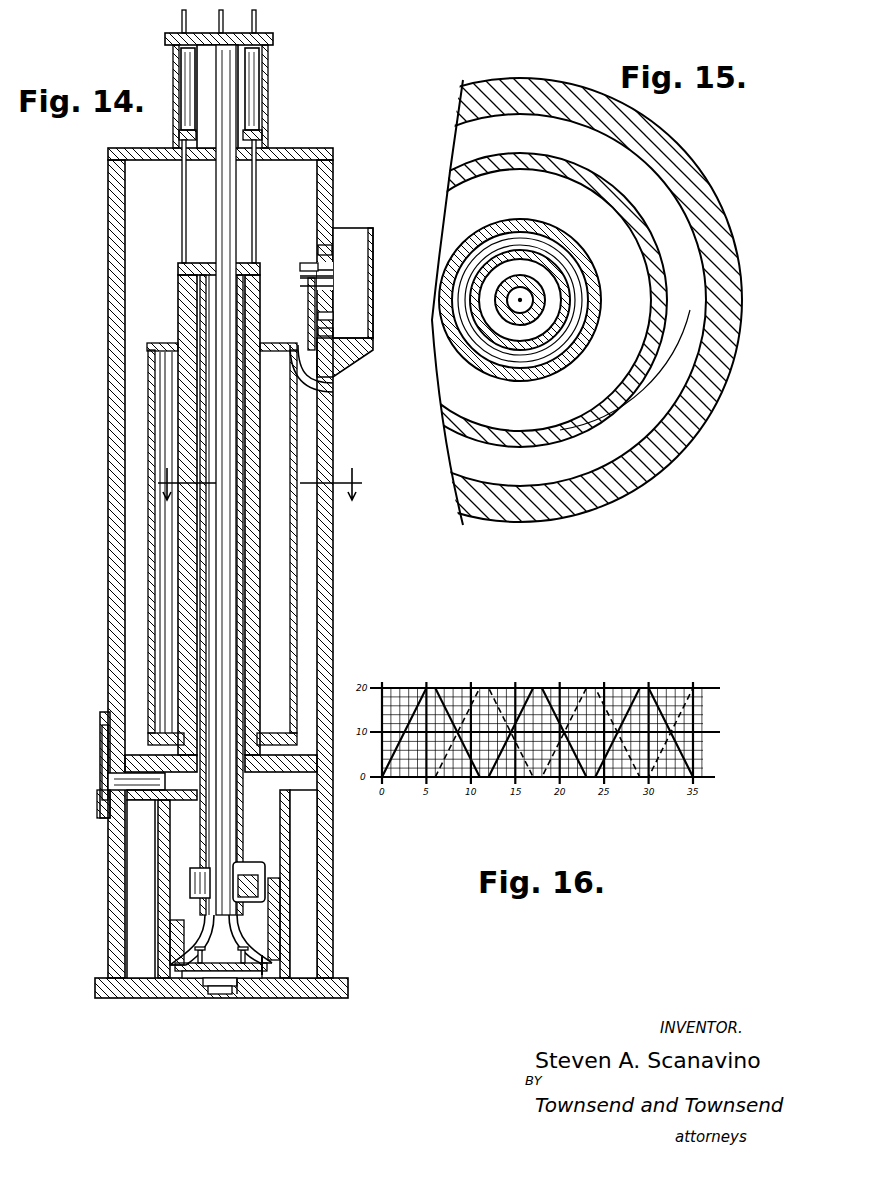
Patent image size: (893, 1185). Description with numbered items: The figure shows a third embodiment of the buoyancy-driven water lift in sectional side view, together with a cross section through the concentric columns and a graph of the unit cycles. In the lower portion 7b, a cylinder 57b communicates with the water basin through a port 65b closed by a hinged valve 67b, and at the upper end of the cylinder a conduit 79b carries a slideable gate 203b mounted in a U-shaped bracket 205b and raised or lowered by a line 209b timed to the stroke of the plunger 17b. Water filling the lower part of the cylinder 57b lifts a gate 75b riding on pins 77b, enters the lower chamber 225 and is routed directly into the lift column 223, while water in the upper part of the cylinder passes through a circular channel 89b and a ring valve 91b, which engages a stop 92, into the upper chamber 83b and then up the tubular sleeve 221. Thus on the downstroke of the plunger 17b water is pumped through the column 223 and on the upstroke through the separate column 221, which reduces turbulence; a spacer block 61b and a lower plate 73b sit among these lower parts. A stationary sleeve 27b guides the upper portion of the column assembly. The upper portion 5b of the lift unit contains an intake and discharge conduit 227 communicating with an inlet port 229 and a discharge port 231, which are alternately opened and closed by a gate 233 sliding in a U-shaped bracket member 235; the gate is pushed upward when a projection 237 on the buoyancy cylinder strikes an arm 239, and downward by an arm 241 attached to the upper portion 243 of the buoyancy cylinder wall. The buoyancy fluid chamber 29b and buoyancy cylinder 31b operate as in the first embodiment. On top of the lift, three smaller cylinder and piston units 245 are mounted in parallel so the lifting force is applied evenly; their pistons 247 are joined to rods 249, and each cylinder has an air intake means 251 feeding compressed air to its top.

In FIG. 14, the upper portion of the lift unit 5b is at (212, 573).
In FIG. 14, the lower portion of the lift unit 7b is at (77, 819).
In FIG. 14, the plunger 17b is at (172, 922).
In FIG. 14, the stationary sleeve 27b is at (262, 553).
In FIG. 15, the stationary sleeve 27b is at (568, 352).
In FIG. 14, the buoyancy fluid chamber 29b is at (320, 606).
In FIG. 15, the buoyancy fluid chamber 29b is at (678, 378).
In FIG. 14, the buoyancy cylinder 31b is at (157, 438).
In FIG. 15, the buoyancy cylinder 31b is at (618, 364).
In FIG. 14, the cylinder 57b is at (168, 850).
In FIG. 14, the spacer block 61b is at (145, 907).
In FIG. 14, the port 65b is at (226, 995).
In FIG. 14, the hinged valve 67b is at (242, 990).
In FIG. 14, the lower plate 73b is at (215, 986).
In FIG. 14, the gate 75b is at (202, 974).
In FIG. 14, the pins 77b is at (182, 968).
In FIG. 14, the conduit 79b is at (110, 770).
In FIG. 14, the upper chamber 83b is at (195, 886).
In FIG. 14, the circular channel 89b is at (273, 897).
In FIG. 14, the ring valve 91b is at (252, 892).
In FIG. 14, the stop 92 is at (246, 877).
In FIG. 14, the slideable gate 203b is at (100, 794).
In FIG. 14, the U-shaped bracket 205b is at (102, 748).
In FIG. 14, the line 209b is at (108, 660).
In FIG. 14, the tubular sleeve 221 is at (204, 270).
In FIG. 15, the tubular sleeve 221 is at (520, 346).
In FIG. 14, the lift column 223 is at (220, 325).
In FIG. 15, the lift column 223 is at (510, 320).
In FIG. 14, the lower chamber 225 is at (263, 965).
In FIG. 14, the intake and discharge conduit 227 is at (371, 282).
In FIG. 14, the inlet port 229 is at (318, 254).
In FIG. 14, the discharge port 231 is at (322, 338).
In FIG. 14, the gate 233 is at (322, 318).
In FIG. 14, the U-shaped bracket member 235 is at (312, 320).
In FIG. 14, the projection 237 is at (306, 360).
In FIG. 14, the arm 239 is at (314, 272).
In FIG. 14, the arm 241 is at (294, 280).
In FIG. 14, the upper portion of the buoyancy cylinder wall 243 is at (306, 272).
In FIG. 14, the cylinder and piston units 245 is at (180, 100).
In FIG. 14, the pistons 247 is at (178, 135).
In FIG. 14, the rods 249 is at (182, 210).
In FIG. 14, the air intake means 251 is at (257, 26).